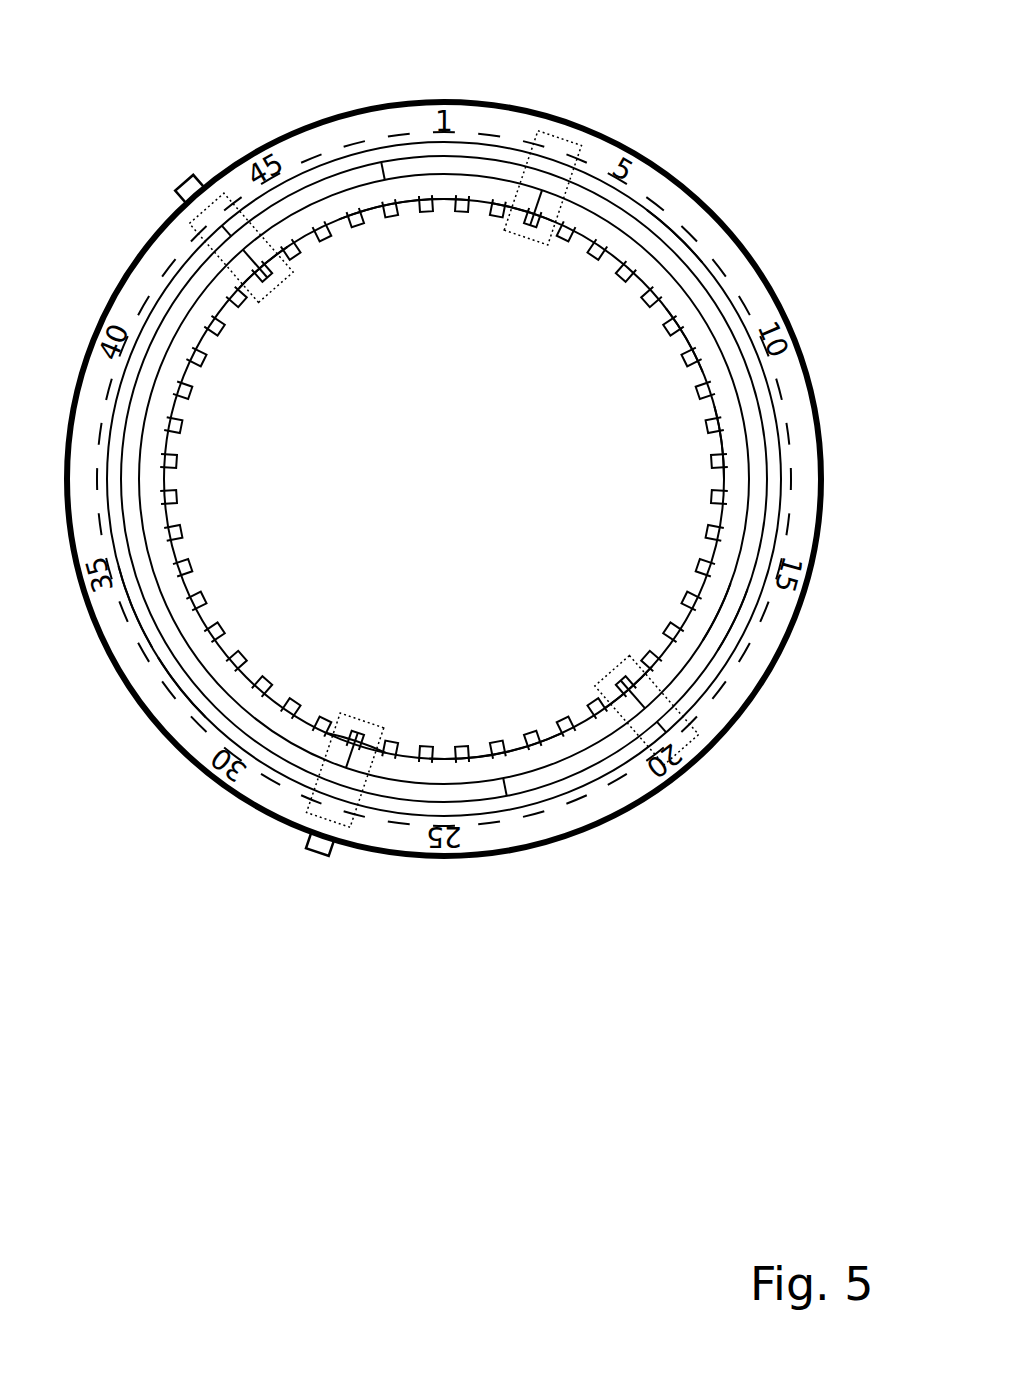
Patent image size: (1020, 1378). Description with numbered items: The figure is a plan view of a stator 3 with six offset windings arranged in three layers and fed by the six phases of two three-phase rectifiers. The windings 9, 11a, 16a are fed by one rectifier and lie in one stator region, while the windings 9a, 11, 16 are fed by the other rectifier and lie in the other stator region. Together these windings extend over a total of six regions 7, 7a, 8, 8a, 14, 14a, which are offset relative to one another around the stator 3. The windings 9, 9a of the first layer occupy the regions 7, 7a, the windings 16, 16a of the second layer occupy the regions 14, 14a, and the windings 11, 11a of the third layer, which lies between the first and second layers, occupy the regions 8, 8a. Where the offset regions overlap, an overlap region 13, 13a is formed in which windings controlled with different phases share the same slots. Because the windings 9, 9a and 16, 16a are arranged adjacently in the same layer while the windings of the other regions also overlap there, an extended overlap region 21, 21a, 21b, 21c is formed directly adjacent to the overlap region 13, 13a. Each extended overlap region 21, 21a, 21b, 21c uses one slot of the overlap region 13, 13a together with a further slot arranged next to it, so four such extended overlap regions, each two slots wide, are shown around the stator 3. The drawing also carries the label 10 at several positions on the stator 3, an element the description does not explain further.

The stator 3 is at (459, 61).
The region 7 is at (768, 585).
The region 7a is at (134, 608).
The region 8 is at (262, 740).
The region 8a is at (736, 621).
The windings 9 is at (670, 240).
The windings 9a is at (188, 683).
The connecting element 10 is at (190, 178).
The windings 11 is at (490, 792).
The windings 11a is at (732, 620).
The overlap region 13 is at (448, 233).
The overlap region 13a is at (448, 727).
The region 14 is at (208, 612).
The region 14a is at (684, 342).
The windings 16 is at (172, 548).
The windings 16a is at (733, 437).
The extended overlap region 21 is at (294, 304).
The extended overlap region 21a is at (605, 660).
The extended overlap region 21b is at (368, 712).
The extended overlap region 21c is at (512, 253).